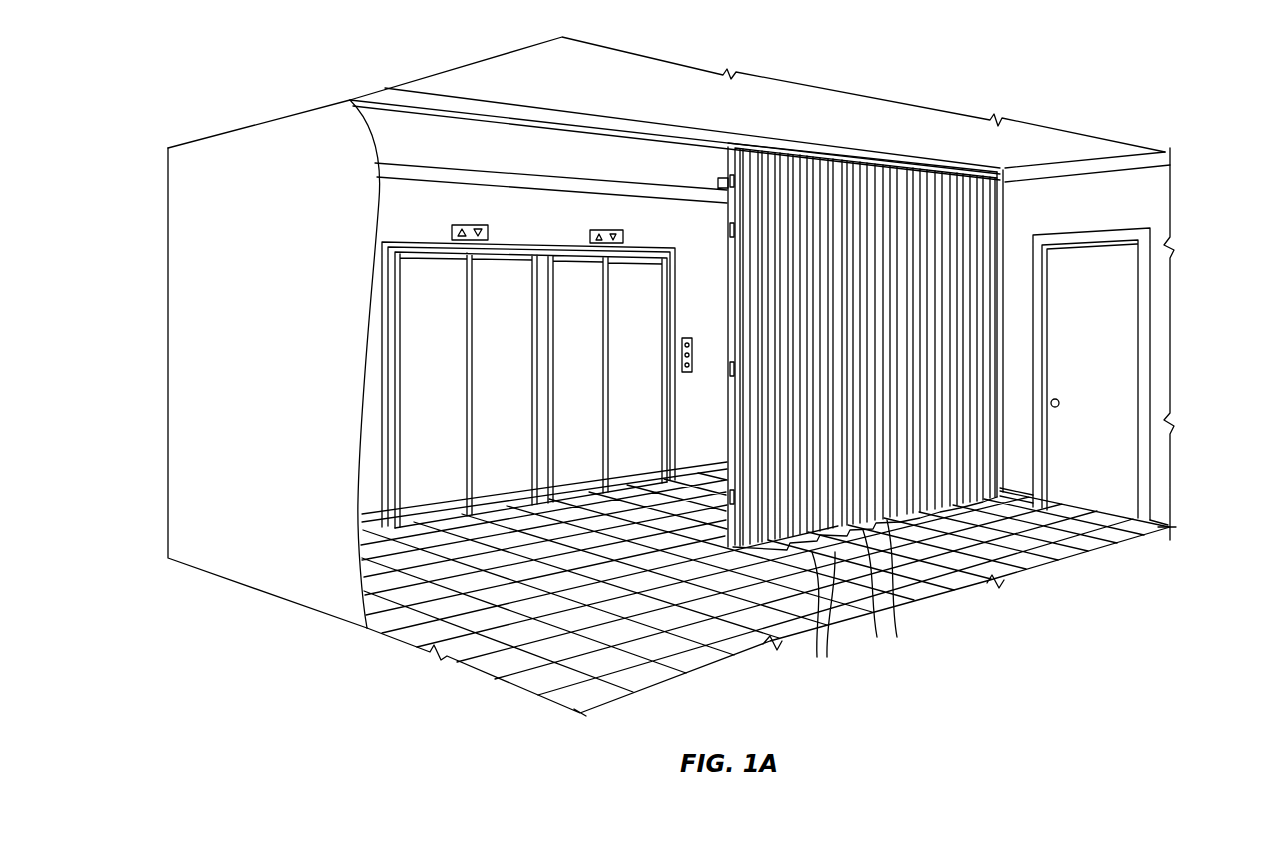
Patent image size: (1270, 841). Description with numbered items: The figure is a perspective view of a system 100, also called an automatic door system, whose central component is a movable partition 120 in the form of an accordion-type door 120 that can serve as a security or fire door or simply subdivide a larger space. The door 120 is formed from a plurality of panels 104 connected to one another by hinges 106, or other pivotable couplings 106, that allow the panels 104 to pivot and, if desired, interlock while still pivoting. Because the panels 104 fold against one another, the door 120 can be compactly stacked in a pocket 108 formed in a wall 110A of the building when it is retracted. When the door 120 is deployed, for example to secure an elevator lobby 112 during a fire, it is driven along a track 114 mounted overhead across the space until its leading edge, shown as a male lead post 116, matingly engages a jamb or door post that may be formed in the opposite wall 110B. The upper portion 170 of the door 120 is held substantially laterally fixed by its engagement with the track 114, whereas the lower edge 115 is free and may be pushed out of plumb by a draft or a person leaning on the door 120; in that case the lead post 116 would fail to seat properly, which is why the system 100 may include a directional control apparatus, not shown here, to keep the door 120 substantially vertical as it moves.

The system 100 is at (1145, 121).
The panels 104 is at (888, 594).
The hinges 106 is at (832, 617).
The pocket 108 is at (1012, 352).
The wall 110A is at (1134, 208).
The wall 110B is at (288, 341).
The elevator lobby 112 is at (917, 124).
The track 114 is at (702, 143).
The lower edge 115 is at (723, 568).
The male lead post 116 is at (724, 231).
The movable partition 120 is at (998, 281).
The upper portion 170 is at (825, 185).